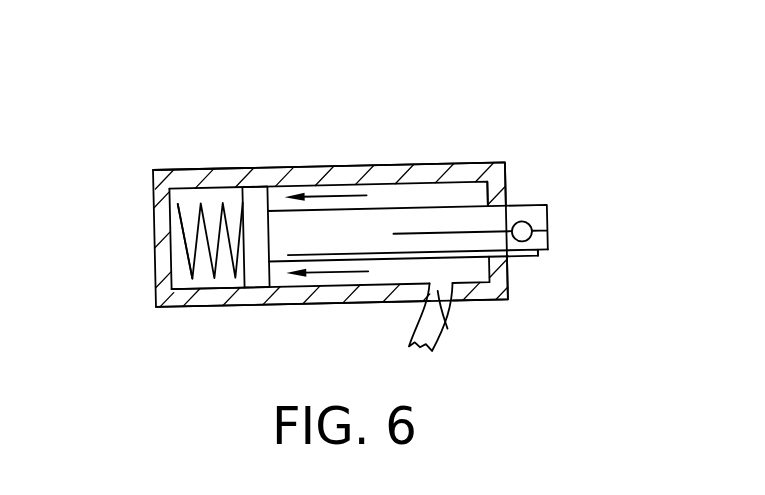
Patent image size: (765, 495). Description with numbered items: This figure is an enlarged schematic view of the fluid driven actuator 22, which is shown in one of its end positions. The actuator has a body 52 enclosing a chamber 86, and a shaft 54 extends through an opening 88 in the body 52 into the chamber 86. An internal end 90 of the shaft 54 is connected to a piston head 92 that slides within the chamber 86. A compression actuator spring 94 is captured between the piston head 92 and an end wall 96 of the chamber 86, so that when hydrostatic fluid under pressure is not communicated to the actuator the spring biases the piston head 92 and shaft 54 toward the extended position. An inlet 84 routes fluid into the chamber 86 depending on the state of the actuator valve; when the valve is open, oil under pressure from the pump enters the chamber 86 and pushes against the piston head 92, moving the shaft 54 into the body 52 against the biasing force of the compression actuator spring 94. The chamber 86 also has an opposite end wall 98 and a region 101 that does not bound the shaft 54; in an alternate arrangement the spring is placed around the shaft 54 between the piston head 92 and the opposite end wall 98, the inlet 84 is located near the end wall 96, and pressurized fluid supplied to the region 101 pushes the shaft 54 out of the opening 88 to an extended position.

The fluid driven actuator 22 is at (334, 108).
The body 52 is at (432, 176).
The shaft 54 is at (536, 259).
The inlet 84 is at (447, 330).
The chamber 86 is at (391, 273).
The opening 88 is at (505, 206).
The internal end 90 is at (395, 210).
The piston head 92 is at (255, 192).
The compression actuator spring 94 is at (180, 232).
The end wall 96 is at (180, 256).
The opposite end wall 98 is at (485, 196).
The region 101 is at (197, 273).